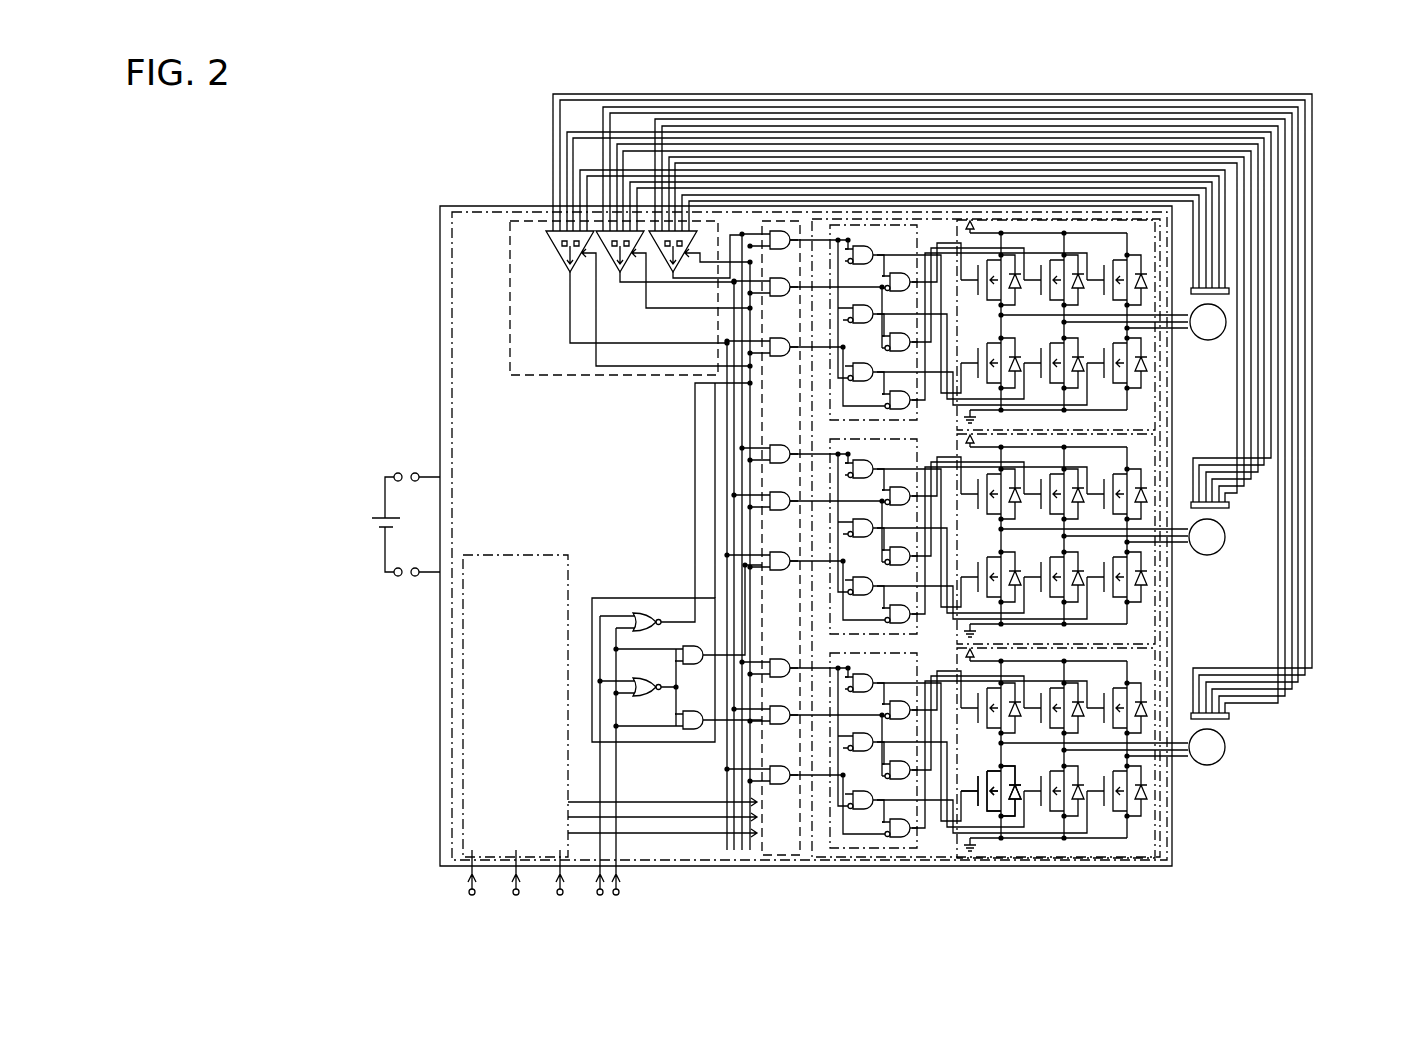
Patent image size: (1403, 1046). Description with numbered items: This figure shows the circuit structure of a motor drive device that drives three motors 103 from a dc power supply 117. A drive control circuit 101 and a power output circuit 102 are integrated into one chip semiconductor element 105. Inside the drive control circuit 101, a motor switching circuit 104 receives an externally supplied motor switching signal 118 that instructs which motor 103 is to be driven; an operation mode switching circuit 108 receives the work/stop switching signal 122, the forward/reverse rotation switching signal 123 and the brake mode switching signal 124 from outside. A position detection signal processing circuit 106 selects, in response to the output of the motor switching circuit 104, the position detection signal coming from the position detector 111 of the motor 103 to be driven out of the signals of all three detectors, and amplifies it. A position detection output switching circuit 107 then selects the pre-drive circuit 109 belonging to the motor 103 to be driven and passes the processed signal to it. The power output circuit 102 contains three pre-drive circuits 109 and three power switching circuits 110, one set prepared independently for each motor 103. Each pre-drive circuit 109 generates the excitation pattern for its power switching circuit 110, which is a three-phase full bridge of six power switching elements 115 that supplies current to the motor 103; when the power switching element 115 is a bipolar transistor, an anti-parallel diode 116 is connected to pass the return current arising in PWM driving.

The drive control circuit 101 is at (445, 207).
The power output circuit 102 is at (1162, 212).
The motor 103 is at (1208, 341).
The motor switching circuit 104 is at (688, 742).
The one chip semiconductor element 105 is at (1172, 210).
The position detection signal processing circuit 106 is at (513, 222).
The position detection output switching circuit 107 is at (797, 850).
The operation mode switching circuit 108 is at (462, 851).
The pre-drive circuit 109 is at (920, 642).
The power switching circuit 110 is at (1155, 428).
The position detector 111 is at (1230, 292).
The power switching element 115 is at (990, 800).
The anti-parallel diode 116 is at (1017, 797).
The dc power supply 117 is at (378, 508).
The motor switching signal 118 is at (607, 896).
The work/stop switching signal 122 is at (467, 888).
The forward/reverse rotation switching signal 123 is at (514, 888).
The brake mode switching signal 124 is at (560, 888).